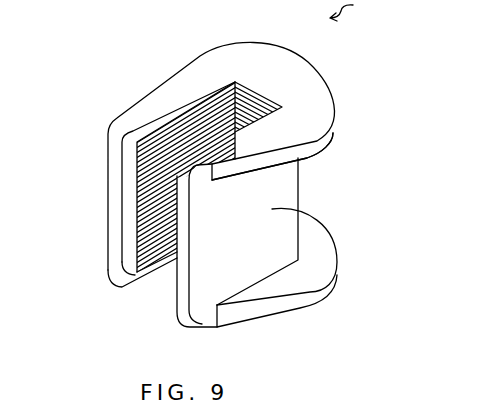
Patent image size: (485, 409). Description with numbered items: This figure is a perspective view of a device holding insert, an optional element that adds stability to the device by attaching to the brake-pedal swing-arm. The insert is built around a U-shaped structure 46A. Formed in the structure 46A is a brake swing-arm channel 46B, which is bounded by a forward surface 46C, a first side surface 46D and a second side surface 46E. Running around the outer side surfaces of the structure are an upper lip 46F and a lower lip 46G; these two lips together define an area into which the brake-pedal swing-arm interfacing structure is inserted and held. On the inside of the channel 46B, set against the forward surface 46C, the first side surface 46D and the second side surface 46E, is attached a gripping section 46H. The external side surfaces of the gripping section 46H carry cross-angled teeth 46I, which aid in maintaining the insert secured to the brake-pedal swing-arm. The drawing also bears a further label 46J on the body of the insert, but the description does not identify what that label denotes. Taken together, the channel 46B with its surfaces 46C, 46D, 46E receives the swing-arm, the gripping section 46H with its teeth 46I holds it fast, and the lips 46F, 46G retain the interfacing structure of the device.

The U-shaped structure 46A is at (310, 87).
The brake swing-arm channel 46B is at (137, 277).
The forward surface 46C is at (233, 82).
The first side surface 46D is at (180, 298).
The second side surface 46E is at (123, 193).
The upper lip 46F is at (325, 143).
The lower lip 46G is at (318, 292).
The gripping section 46H is at (152, 177).
The cross-angled teeth 46I is at (170, 150).
The web face 46J is at (300, 216).